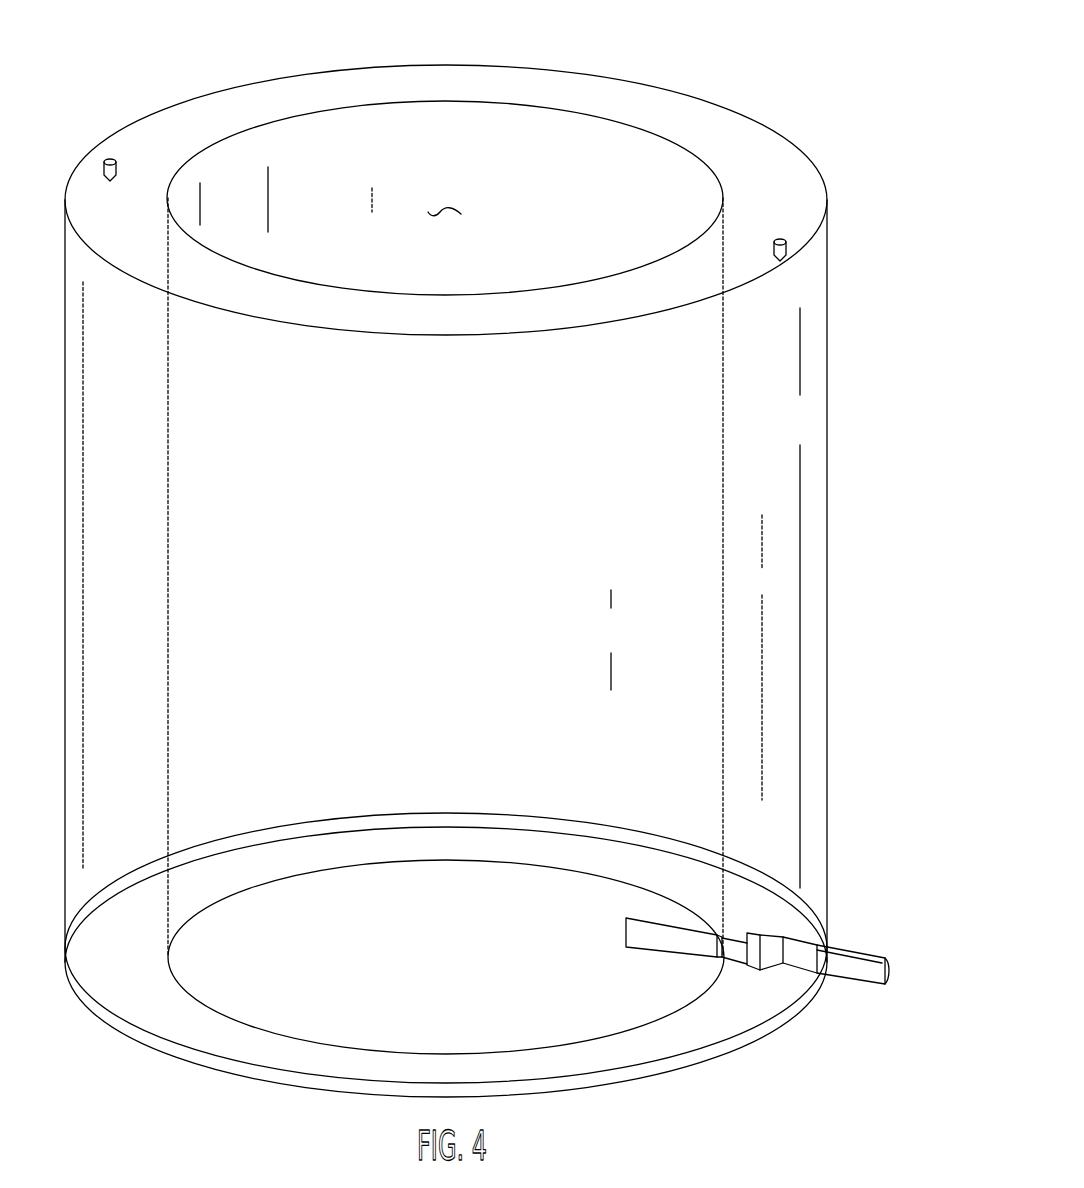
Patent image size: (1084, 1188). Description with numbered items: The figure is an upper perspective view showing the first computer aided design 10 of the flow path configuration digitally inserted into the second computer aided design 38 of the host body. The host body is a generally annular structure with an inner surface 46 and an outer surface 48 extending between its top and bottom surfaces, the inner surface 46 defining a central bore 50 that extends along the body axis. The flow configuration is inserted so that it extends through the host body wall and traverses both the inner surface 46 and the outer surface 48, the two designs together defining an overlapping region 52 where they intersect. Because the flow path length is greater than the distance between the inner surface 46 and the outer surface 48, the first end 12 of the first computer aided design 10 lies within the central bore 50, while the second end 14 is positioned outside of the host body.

The first computer aided design 10 is at (736, 932).
The first end 12 is at (623, 928).
The second end 14 is at (889, 980).
The second computer aided design 38 is at (812, 119).
The inner surface 46 is at (637, 162).
The outer surface 48 is at (805, 352).
The central bore 50 is at (446, 210).
The overlapping region 52 is at (773, 938).